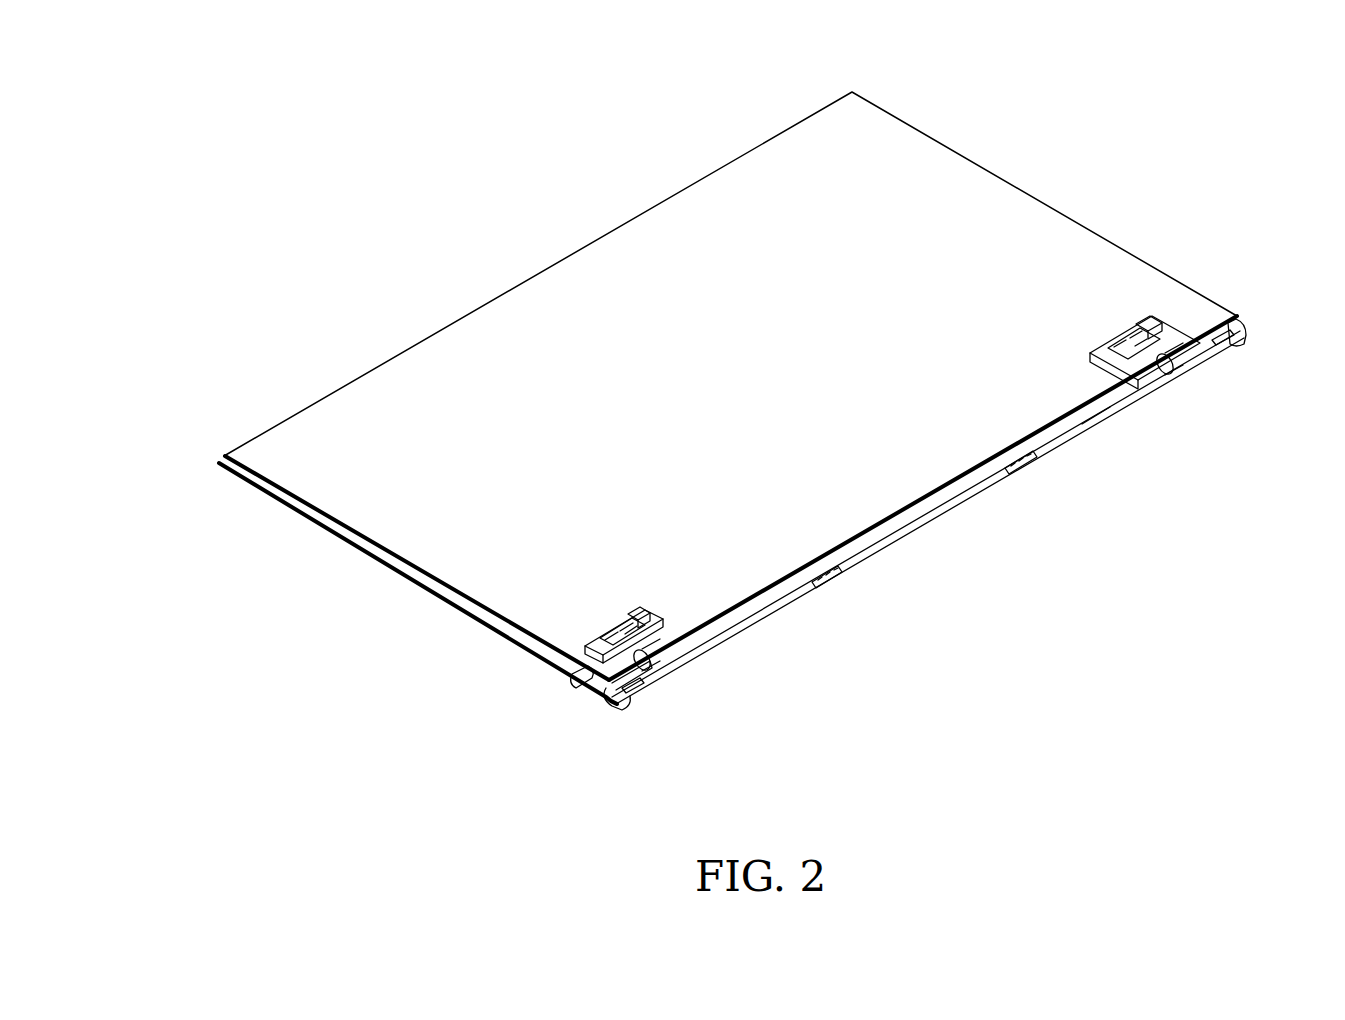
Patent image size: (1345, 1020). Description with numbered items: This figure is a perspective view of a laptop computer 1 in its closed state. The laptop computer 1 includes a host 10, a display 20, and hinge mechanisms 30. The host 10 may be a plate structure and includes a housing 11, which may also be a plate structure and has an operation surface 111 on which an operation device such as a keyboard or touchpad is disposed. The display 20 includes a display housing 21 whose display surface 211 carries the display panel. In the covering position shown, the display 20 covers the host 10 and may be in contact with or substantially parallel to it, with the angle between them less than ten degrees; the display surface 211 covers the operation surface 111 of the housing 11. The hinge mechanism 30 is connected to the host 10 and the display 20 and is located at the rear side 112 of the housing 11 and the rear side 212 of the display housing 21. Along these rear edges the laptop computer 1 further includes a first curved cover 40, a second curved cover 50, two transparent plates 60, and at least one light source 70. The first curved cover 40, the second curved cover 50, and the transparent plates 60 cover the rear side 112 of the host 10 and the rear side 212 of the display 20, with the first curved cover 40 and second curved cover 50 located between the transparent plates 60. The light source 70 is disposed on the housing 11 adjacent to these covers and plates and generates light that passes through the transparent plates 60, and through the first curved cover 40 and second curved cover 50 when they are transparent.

The laptop computer 1 is at (152, 57).
The host 10 is at (256, 519).
The housing 11 is at (216, 468).
The operation surface 111 is at (373, 529).
The rear side 112 is at (840, 677).
The display 20 is at (553, 222).
The display housing 21 is at (222, 456).
The display surface 211 is at (308, 539).
The rear side 212 is at (904, 496).
The hinge mechanism 30 is at (1184, 317).
The first curved cover 40 is at (1102, 432).
The second curved cover 50 is at (1096, 415).
The transparent plate 60 is at (582, 694).
The light source 70 is at (656, 667).